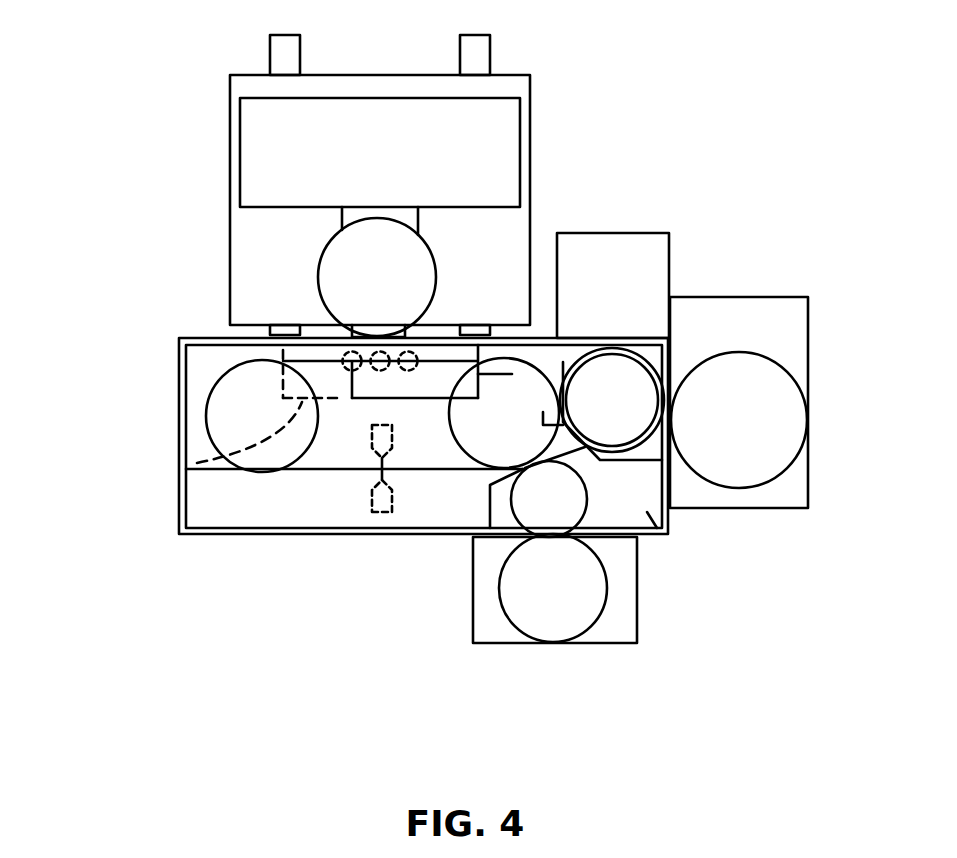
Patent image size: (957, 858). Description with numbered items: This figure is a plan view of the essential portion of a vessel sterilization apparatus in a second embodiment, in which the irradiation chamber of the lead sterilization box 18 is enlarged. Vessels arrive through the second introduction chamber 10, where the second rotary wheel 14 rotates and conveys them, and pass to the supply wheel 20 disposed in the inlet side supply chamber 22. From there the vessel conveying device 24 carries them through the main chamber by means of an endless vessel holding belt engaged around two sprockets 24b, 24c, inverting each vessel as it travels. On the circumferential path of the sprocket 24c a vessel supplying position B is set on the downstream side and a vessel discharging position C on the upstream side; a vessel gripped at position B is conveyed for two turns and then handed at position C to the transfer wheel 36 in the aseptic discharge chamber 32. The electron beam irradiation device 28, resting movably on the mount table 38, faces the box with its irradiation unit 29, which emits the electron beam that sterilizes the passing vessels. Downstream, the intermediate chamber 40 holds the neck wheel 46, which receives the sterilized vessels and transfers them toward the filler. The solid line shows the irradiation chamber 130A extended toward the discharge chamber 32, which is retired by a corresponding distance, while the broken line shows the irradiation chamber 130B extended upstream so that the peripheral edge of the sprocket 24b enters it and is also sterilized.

The second introduction chamber 10 is at (638, 603).
The second rotary wheel 14 is at (562, 608).
The sterilization box 18 is at (222, 540).
The supply wheel 20 is at (538, 507).
The inlet side supply chamber 22 is at (662, 537).
The vessel conveying device 24 is at (330, 485).
The sprocket 24b is at (207, 413).
The sprocket 24c is at (512, 397).
The electron beam irradiation device 28 is at (277, 150).
The irradiation unit 29 is at (350, 277).
The discharge chamber 32 is at (545, 363).
The transfer wheel 36 is at (628, 368).
The mount table 38 is at (532, 142).
The intermediate chamber 40 is at (757, 297).
The neck wheel 46 is at (780, 417).
The irradiation chamber 130A is at (418, 400).
The irradiation chamber 130B is at (197, 463).
The vessel supplying position B is at (542, 478).
The vessel discharging position C is at (570, 400).